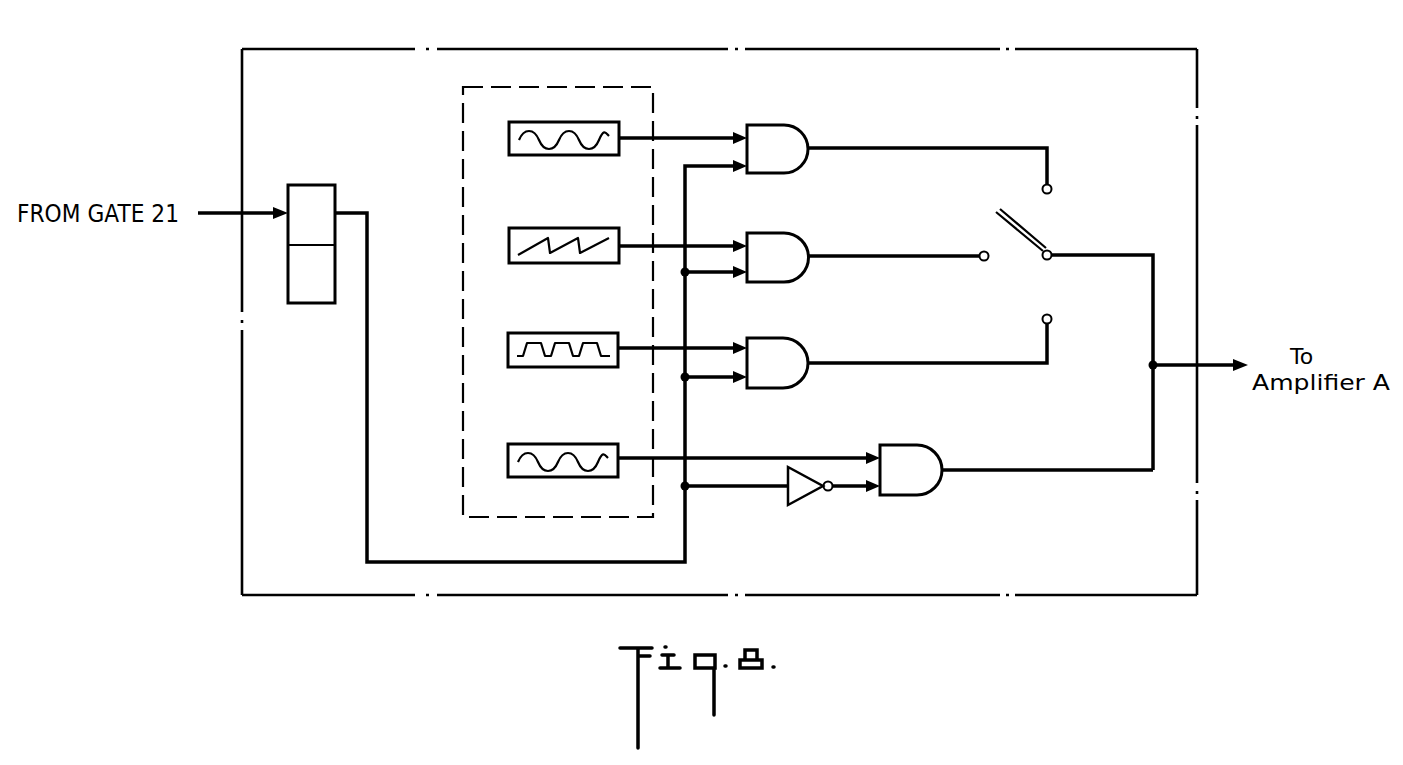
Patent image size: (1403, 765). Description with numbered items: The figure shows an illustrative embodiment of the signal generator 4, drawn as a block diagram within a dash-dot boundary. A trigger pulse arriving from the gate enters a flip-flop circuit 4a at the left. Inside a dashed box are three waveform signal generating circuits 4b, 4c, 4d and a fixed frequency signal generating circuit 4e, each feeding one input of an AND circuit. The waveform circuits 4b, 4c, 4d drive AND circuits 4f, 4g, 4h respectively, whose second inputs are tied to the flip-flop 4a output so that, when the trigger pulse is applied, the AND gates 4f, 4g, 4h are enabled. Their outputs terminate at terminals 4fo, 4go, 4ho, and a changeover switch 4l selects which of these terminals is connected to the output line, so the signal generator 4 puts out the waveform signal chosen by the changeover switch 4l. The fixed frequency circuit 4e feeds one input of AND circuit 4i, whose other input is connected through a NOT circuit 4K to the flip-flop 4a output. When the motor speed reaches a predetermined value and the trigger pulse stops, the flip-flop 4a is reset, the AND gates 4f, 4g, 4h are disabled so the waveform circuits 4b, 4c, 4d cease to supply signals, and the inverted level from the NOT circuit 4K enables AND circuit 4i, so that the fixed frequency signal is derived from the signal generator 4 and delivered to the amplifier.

The signal generator 4 is at (1197, 156).
The flip-flop circuit 4a is at (291, 303).
The waveform signal generating circuit 4b is at (509, 128).
The waveform signal generating circuit 4c is at (509, 241).
The waveform signal generating circuit 4d is at (508, 352).
The fixed frequency signal generating circuit 4e is at (508, 455).
The AND circuit 4f is at (800, 134).
The output terminal of AND gate 4f 4fo is at (1052, 187).
The AND circuit 4g is at (802, 242).
The output terminal of AND gate 4g 4go is at (982, 261).
The AND circuit 4h is at (802, 352).
The output terminal of AND gate 4h 4ho is at (1052, 322).
The AND circuit 4i is at (920, 495).
The NOT circuit 4K is at (795, 503).
The changeover switch 4l is at (1027, 232).